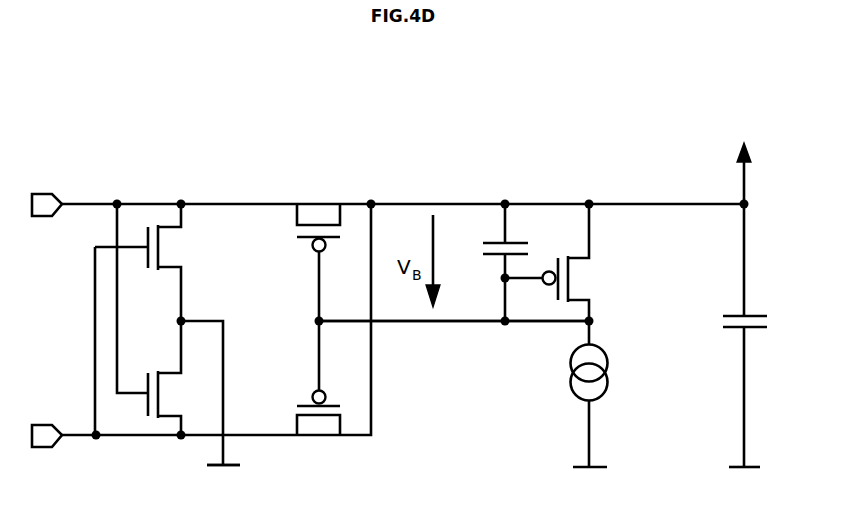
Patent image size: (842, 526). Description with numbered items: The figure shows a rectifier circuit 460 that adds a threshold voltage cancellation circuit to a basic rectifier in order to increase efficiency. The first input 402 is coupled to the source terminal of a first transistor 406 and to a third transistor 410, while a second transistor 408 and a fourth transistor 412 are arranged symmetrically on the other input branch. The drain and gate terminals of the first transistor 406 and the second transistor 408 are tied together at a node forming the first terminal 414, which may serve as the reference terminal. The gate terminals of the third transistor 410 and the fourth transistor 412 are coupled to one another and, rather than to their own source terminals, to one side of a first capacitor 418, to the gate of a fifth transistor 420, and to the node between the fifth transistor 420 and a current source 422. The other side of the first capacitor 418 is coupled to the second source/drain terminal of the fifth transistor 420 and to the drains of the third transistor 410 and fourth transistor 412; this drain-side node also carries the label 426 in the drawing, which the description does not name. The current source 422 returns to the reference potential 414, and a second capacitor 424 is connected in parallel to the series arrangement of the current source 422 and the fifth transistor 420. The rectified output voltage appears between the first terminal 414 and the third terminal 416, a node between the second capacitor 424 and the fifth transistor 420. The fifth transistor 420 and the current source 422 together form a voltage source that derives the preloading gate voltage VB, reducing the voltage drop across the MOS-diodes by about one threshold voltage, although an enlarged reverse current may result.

The rectifier circuit 460 is at (161, 108).
The first input 402 is at (50, 190).
The first transistor 406 is at (175, 249).
The second transistor 408 is at (183, 394).
The third transistor 410 is at (320, 200).
The fourth transistor 412 is at (319, 445).
The first terminal 414 is at (218, 470).
The third terminal 416 is at (465, 330).
The first capacitor 418 is at (493, 232).
The fifth transistor 420 is at (594, 277).
The current source 422 is at (617, 378).
The second capacitor 424 is at (722, 323).
The supply node 426 is at (754, 208).